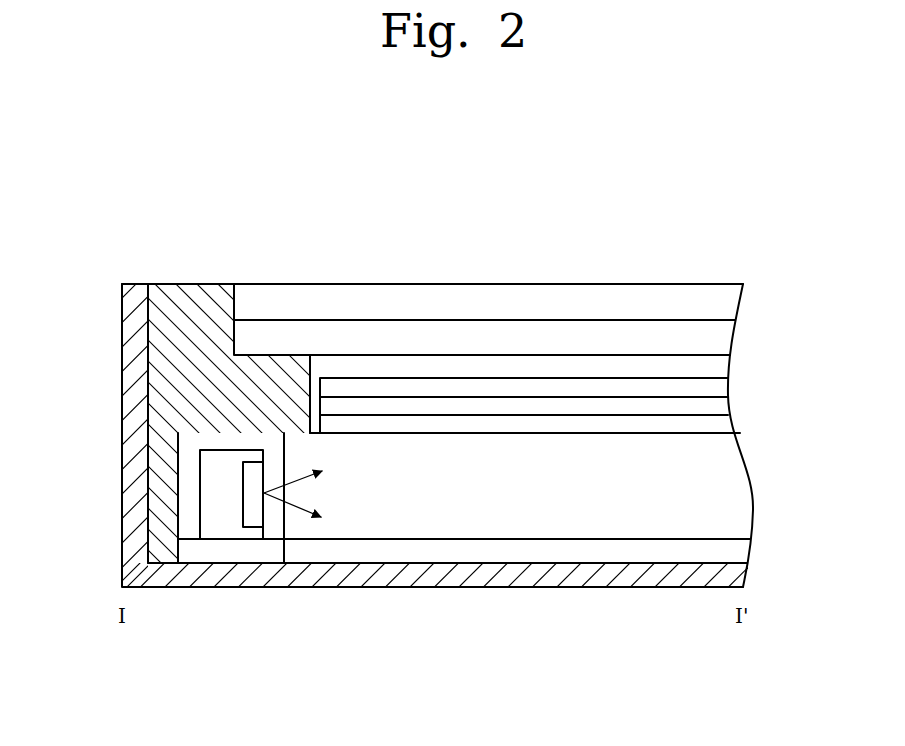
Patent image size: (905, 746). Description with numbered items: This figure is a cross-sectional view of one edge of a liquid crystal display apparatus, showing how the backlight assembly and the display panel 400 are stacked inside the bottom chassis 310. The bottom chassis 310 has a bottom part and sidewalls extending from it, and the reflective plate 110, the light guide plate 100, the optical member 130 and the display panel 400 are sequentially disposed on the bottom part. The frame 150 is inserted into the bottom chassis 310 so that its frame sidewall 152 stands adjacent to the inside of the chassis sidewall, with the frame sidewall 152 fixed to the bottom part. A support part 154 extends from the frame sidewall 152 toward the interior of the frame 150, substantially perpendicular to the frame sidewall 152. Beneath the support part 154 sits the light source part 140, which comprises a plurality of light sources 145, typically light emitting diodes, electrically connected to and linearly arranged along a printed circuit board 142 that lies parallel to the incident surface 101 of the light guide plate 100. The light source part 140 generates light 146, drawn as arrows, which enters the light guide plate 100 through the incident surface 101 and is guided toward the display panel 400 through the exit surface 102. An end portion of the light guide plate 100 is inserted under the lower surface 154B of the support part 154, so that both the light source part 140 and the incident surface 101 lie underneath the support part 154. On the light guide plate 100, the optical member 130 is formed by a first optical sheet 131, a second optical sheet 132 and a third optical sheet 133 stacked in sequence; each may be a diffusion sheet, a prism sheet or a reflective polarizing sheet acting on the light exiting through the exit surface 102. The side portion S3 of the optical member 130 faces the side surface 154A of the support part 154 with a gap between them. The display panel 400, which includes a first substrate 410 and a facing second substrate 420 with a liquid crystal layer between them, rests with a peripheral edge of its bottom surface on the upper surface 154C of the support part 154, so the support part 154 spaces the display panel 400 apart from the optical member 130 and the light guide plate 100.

The light guide plate 100 is at (737, 487).
The incident surface 101 is at (290, 460).
The exit surface 102 is at (445, 433).
The reflective plate 110 is at (597, 555).
The optical member 130 is at (568, 225).
The first optical sheet 131 is at (682, 420).
The second optical sheet 132 is at (635, 407).
The third optical sheet 133 is at (577, 383).
The light source part 140 is at (178, 656).
The printed circuit board 142 is at (247, 555).
The light source 145 is at (218, 527).
The light 146 is at (303, 512).
The frame 150 is at (150, 225).
The frame sidewall 152 is at (160, 462).
The support part 154 is at (258, 370).
The side surface 154A is at (315, 368).
The lower surface 154B is at (227, 436).
The upper surface 154C is at (282, 352).
The side portion S3 is at (312, 406).
The bottom chassis 310 is at (527, 580).
The display panel 400 is at (450, 225).
The first substrate 410 is at (508, 313).
The second substrate 420 is at (455, 297).